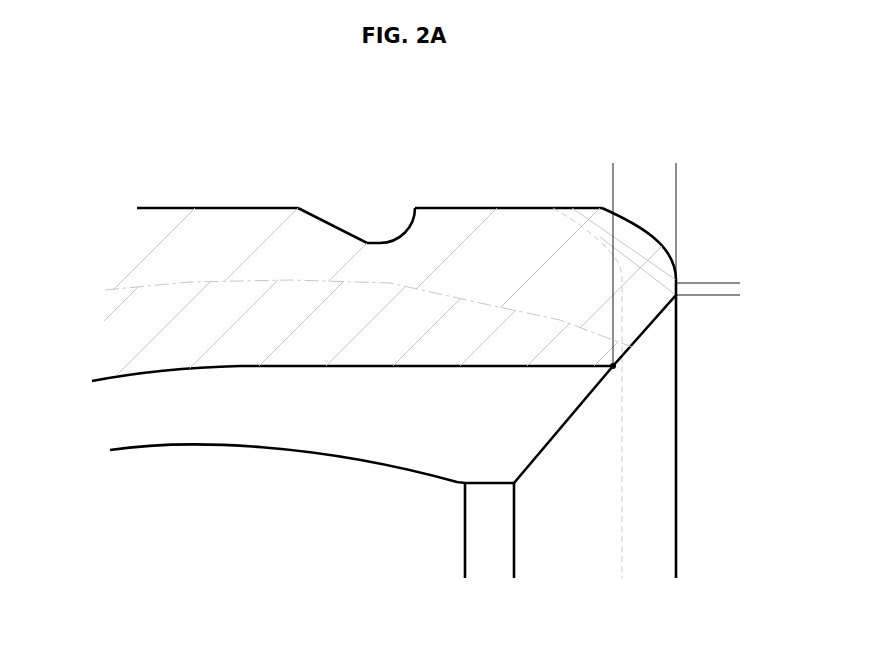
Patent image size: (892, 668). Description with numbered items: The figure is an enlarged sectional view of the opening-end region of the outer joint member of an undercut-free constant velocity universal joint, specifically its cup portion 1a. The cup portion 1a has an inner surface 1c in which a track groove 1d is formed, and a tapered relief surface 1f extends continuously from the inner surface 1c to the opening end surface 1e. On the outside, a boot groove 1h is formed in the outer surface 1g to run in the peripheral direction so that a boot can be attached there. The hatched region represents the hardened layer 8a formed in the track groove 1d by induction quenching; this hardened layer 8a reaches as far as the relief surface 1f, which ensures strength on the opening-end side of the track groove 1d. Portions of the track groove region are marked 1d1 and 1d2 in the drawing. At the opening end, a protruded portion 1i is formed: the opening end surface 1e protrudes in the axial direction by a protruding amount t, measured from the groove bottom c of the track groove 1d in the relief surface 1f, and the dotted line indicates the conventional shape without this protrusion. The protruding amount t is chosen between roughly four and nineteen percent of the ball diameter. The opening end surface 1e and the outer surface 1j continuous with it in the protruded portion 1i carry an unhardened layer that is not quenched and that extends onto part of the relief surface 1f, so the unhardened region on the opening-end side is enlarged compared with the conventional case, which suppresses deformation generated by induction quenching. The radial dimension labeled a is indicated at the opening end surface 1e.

The cup portion 1a is at (275, 187).
The inner surface 1c is at (335, 457).
The track groove 1d is at (373, 368).
The first groove portion 1d1 is at (150, 373).
The second groove portion 1d2 is at (440, 368).
The opening end surface 1e is at (677, 288).
The relief surface 1f is at (572, 422).
The outer surface 1g is at (450, 208).
The boot groove 1h is at (373, 243).
The protruded portion 1i is at (637, 250).
The outer surface 1j is at (632, 222).
The hardened layer 8a is at (230, 300).
The protruding amount t is at (676, 169).
The end face width a is at (737, 250).
The groove bottom c is at (613, 367).